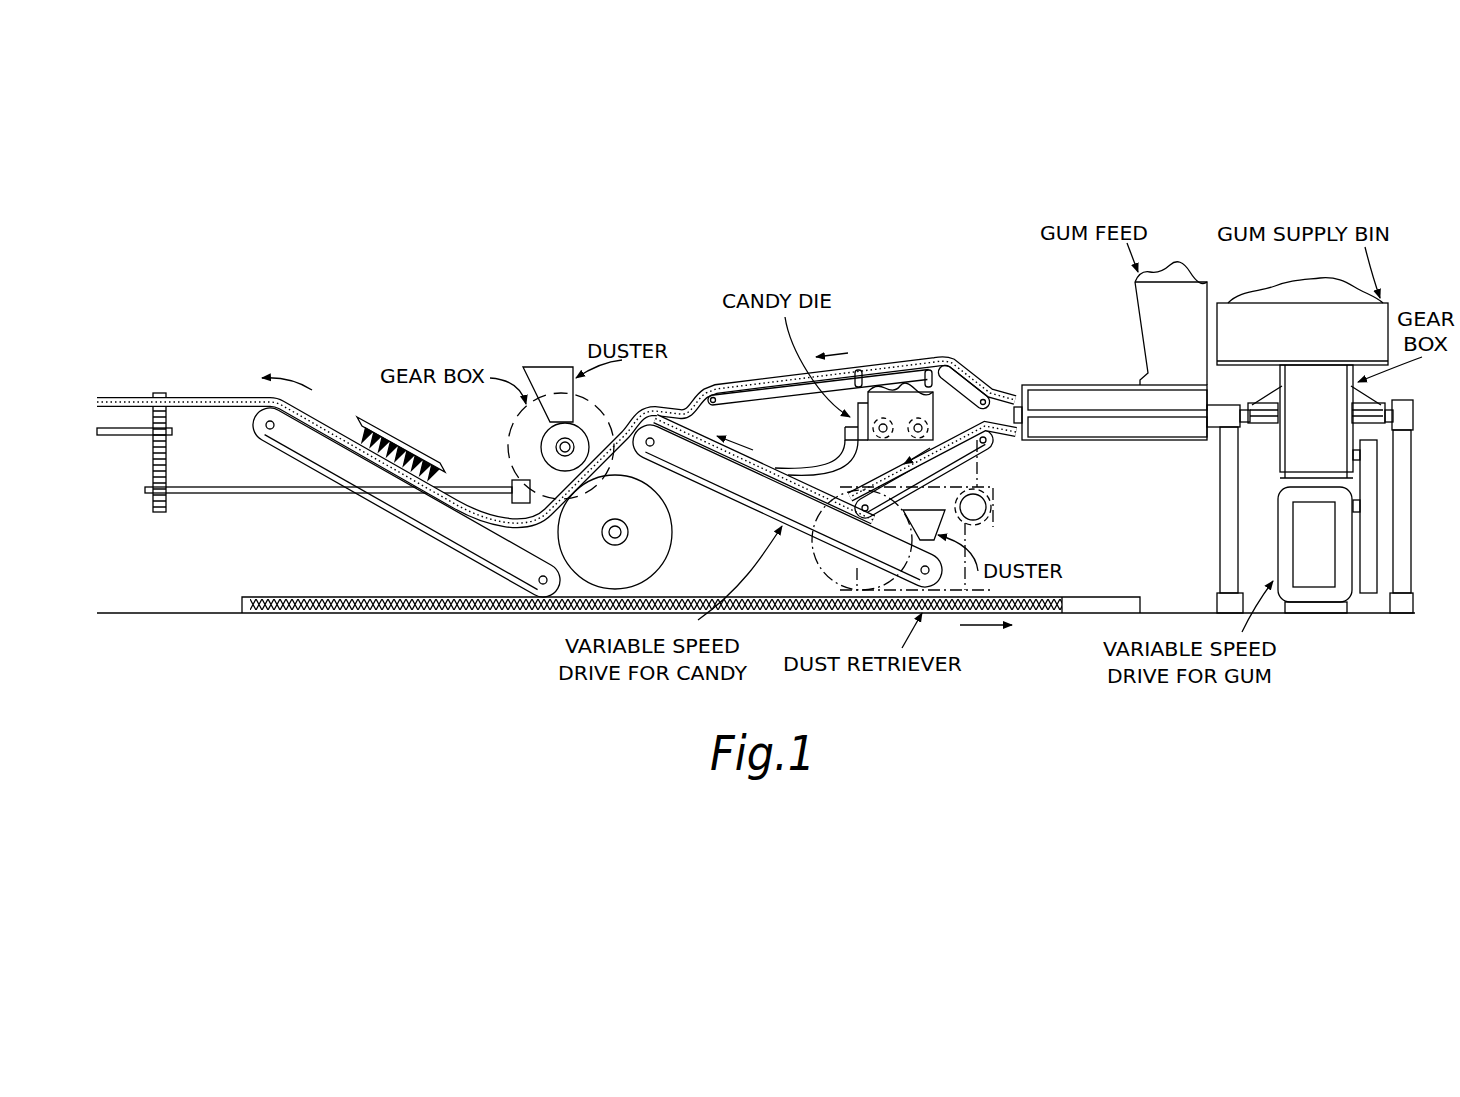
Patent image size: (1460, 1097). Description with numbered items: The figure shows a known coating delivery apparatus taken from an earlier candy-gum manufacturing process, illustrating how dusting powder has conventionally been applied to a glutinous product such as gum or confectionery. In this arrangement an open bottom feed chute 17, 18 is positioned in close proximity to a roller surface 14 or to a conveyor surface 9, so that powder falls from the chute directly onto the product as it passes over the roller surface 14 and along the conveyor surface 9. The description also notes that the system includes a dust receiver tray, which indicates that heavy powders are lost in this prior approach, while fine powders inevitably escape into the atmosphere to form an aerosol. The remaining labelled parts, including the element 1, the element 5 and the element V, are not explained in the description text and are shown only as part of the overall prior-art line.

The gum feed hopper 1 is at (1155, 308).
The candy strip support plate 5 is at (752, 398).
The conveyor surface 9 is at (697, 481).
The roller surface 14 is at (543, 446).
The open bottom feed chute 17 is at (960, 521).
The open bottom feed chute 18 is at (540, 367).
The variable speed drive motor for gum V is at (1342, 590).